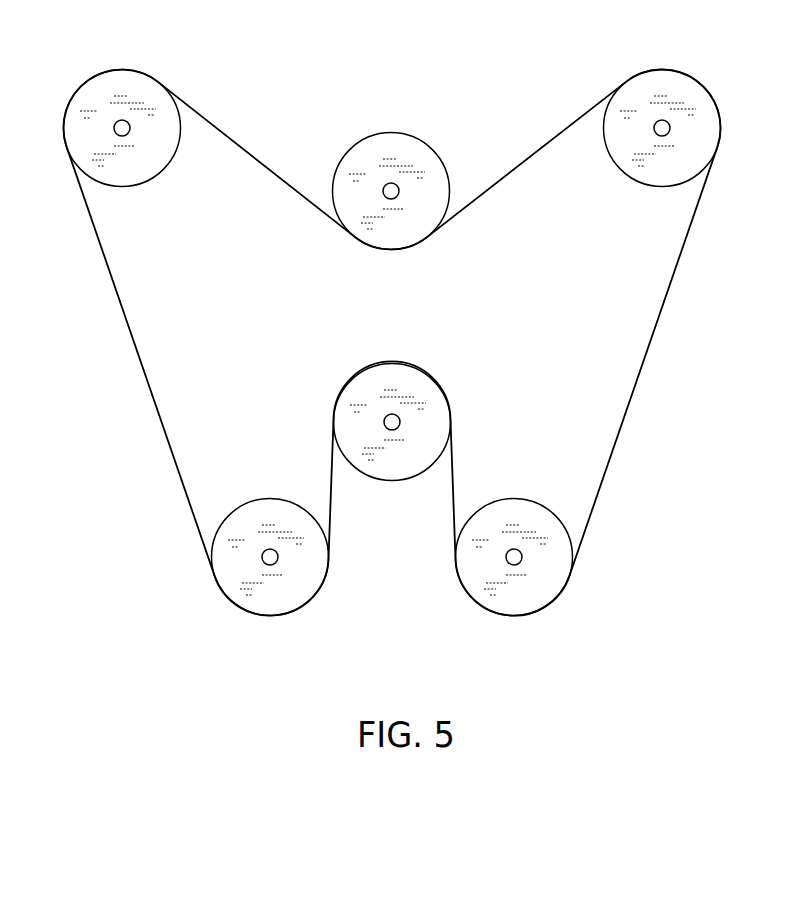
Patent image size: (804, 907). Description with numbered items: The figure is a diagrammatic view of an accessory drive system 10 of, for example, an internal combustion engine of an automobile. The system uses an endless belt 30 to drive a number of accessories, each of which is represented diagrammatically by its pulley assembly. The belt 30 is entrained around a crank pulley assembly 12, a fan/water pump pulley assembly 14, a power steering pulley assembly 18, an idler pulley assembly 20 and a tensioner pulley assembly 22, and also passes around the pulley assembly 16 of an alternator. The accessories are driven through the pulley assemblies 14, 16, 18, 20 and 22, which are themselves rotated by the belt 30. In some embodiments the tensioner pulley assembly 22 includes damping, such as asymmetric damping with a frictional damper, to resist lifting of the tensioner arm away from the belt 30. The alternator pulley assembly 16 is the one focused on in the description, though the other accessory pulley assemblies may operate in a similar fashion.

The accessory drive system 10 is at (343, 73).
The crank pulley assembly 12 is at (283, 607).
The fan/water pump pulley assembly 14 is at (403, 380).
The alternator pulley assembly 16 is at (552, 580).
The power steering pulley assembly 18 is at (667, 88).
The idler pulley assembly 20 is at (397, 144).
The tensioner pulley assembly 22 is at (125, 80).
The endless belt 30 is at (615, 447).